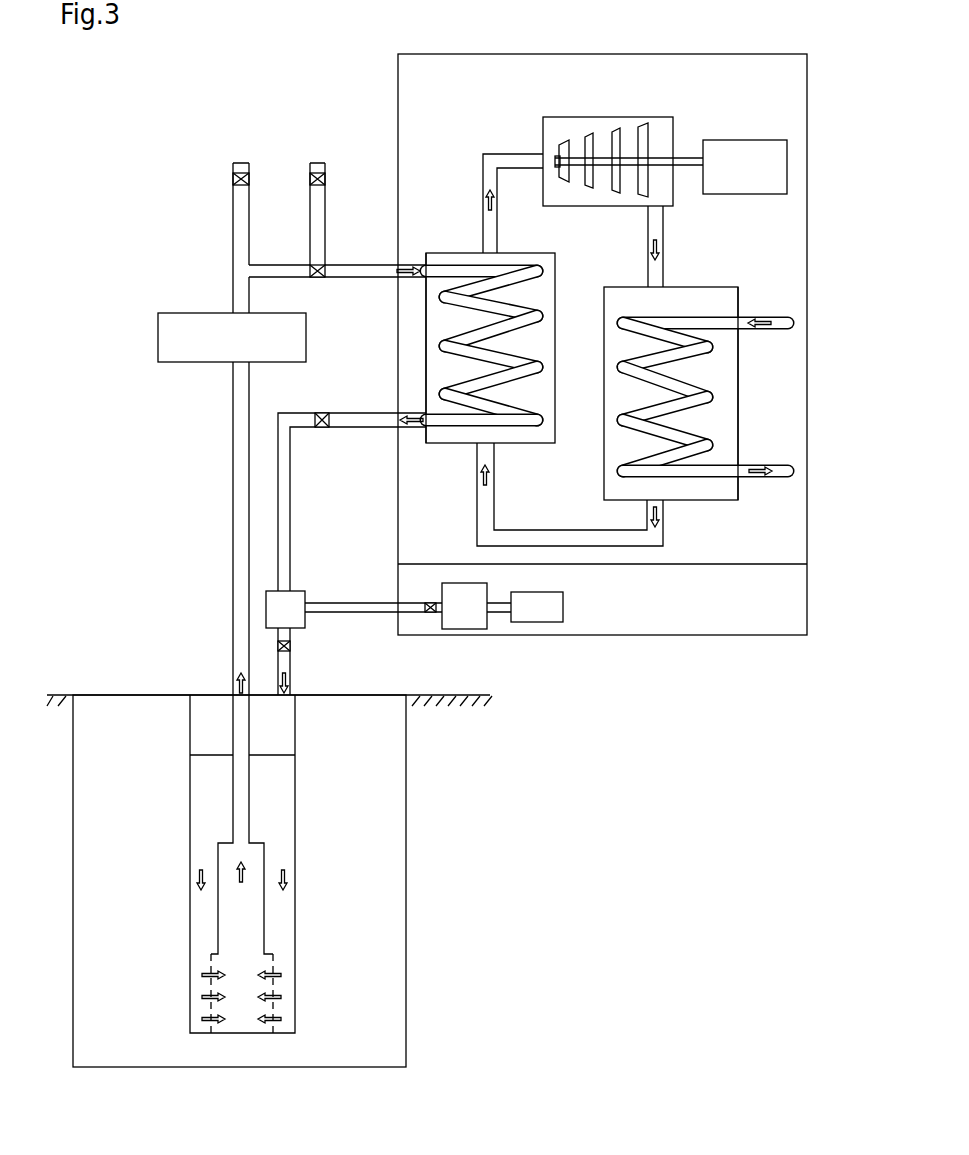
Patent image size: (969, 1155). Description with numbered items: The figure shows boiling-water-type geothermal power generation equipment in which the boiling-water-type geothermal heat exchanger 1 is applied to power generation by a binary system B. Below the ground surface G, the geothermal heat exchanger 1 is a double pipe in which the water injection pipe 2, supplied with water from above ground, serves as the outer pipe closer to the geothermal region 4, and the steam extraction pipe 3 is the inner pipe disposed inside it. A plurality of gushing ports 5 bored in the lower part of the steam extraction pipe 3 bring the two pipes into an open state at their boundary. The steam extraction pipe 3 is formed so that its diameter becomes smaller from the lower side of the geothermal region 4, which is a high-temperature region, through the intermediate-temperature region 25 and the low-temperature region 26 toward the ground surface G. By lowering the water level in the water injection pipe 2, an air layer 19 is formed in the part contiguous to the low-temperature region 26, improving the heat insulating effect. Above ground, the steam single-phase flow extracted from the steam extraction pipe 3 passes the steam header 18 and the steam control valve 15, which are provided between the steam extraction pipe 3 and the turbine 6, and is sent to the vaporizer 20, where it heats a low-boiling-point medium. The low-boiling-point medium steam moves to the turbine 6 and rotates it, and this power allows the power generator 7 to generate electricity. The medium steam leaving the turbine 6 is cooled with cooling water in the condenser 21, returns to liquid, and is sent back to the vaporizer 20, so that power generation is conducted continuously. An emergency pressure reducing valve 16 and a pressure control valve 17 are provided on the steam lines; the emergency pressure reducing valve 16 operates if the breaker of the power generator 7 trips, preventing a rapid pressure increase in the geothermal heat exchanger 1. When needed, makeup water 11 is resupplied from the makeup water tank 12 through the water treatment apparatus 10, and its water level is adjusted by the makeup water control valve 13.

The geothermal heat exchanger 1 is at (195, 675).
The water injection pipe 2 is at (288, 782).
The steam extraction pipe 3 is at (240, 797).
The geothermal region 4 is at (423, 1007).
The gushing ports 5 is at (210, 990).
The turbine 6 is at (598, 125).
The power generator 7 is at (750, 158).
The water treatment apparatus 10 is at (465, 619).
The makeup water 11 is at (550, 608).
The makeup water tank 12 is at (288, 617).
The makeup water control valve 13 is at (290, 646).
The steam control valve 15 is at (318, 277).
The emergency pressure reducing valve 16 is at (250, 178).
The pressure control valve 17 is at (325, 178).
The steam header 18 is at (272, 347).
The air layer 19 is at (217, 735).
The vaporizer 20 is at (530, 297).
The condenser 21 is at (715, 387).
The intermediate-temperature region 25 is at (425, 913).
The low-temperature region 26 is at (420, 788).
The binary system B is at (713, 523).
The ground surface G is at (420, 694).